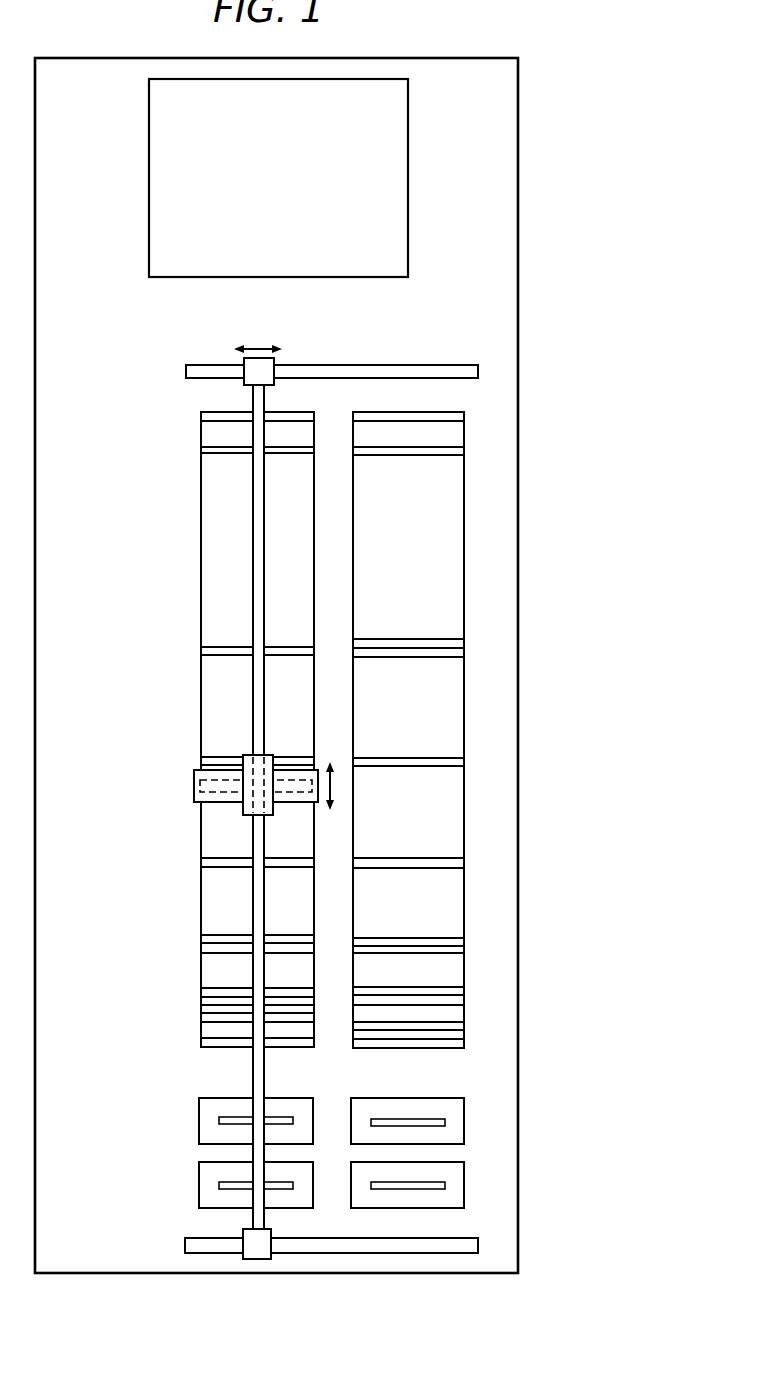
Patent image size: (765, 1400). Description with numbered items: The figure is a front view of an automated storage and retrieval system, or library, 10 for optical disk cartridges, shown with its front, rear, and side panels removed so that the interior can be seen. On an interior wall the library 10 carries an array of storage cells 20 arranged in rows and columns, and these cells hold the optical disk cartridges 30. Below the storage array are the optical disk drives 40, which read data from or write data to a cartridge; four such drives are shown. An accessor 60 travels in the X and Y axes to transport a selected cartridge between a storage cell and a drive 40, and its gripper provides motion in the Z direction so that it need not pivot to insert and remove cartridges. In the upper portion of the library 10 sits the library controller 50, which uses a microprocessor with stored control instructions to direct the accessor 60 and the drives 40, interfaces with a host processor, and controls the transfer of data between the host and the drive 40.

The automated storage and retrieval system 10 is at (552, 140).
The array of storage cells 20 is at (462, 590).
The optical disk cartridges 30 is at (180, 413).
The optical disk drive 40 is at (490, 1115).
The library controller 50 is at (130, 142).
The accessor 60 is at (175, 782).